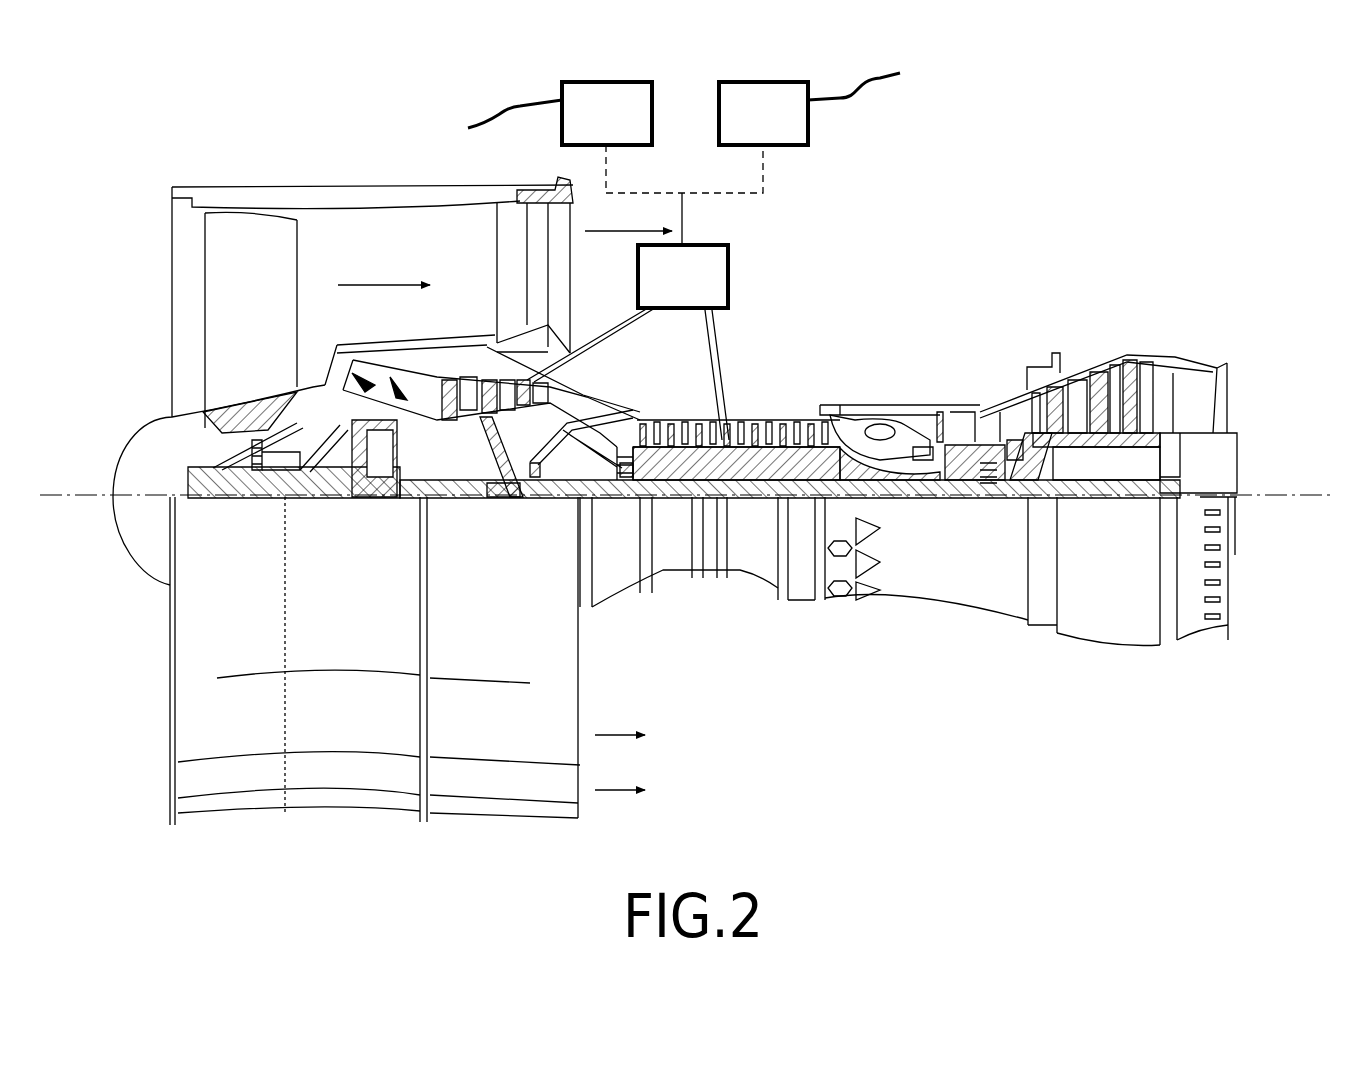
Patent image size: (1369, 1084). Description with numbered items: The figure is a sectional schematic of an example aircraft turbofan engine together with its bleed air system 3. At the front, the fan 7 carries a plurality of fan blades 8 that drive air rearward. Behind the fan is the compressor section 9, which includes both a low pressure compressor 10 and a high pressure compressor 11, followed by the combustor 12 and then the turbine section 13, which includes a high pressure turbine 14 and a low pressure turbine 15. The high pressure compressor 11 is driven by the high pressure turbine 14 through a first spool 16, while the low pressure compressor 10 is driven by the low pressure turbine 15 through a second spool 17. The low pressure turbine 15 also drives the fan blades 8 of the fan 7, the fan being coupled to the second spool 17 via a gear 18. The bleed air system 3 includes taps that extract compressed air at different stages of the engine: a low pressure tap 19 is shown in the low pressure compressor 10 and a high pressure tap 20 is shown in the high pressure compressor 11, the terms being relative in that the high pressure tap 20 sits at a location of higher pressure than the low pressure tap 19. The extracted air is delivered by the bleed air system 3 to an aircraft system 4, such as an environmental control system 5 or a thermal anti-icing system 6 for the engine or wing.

The bleed air system 3 is at (645, 263).
The aircraft system 4 is at (683, 103).
The environmental control system 5 is at (763, 113).
The thermal anti-icing system 6 is at (607, 113).
The fan 7 is at (225, 320).
The fan blades 8 is at (208, 270).
The compressor section 9 is at (805, 652).
The low pressure compressor 10 is at (527, 397).
The high pressure compressor 11 is at (733, 443).
The combustor 12 is at (880, 432).
The turbine section 13 is at (1210, 652).
The high pressure turbine 14 is at (977, 420).
The low pressure turbine 15 is at (1150, 367).
The first spool 16 is at (722, 470).
The second spool 17 is at (492, 482).
The gear 18 is at (258, 480).
The low pressure tap 19 is at (548, 380).
The high pressure tap 20 is at (727, 387).